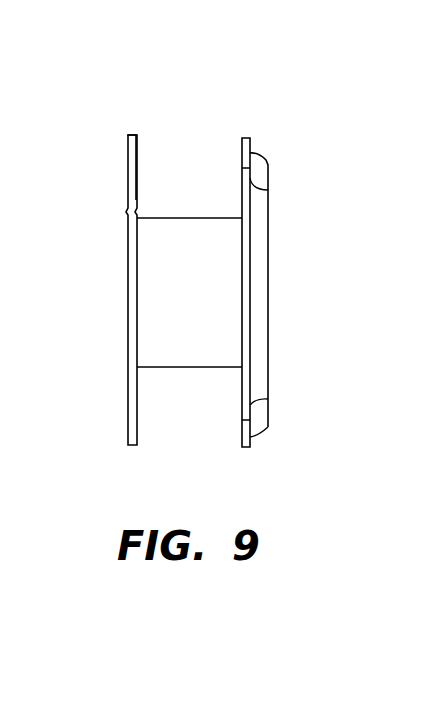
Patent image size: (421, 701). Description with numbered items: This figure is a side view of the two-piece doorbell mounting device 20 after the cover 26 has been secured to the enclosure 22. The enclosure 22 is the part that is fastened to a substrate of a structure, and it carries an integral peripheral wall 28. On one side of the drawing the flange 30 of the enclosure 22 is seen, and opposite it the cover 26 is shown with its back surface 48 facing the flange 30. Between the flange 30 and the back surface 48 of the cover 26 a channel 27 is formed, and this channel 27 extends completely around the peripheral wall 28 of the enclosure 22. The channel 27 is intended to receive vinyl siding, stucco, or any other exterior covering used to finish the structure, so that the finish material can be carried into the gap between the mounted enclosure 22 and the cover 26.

The two-piece doorbell mounting device 20 is at (234, 258).
The enclosure 22 is at (126, 320).
The cover member 26 is at (258, 290).
The channel 27 is at (189, 160).
The peripheral wall 28 is at (201, 298).
The flange 30 is at (126, 168).
The back surface 48 is at (242, 403).